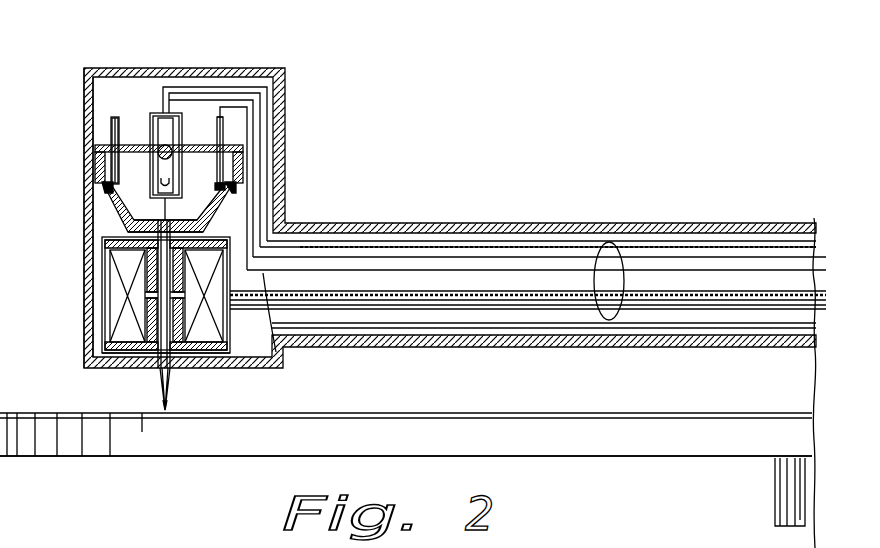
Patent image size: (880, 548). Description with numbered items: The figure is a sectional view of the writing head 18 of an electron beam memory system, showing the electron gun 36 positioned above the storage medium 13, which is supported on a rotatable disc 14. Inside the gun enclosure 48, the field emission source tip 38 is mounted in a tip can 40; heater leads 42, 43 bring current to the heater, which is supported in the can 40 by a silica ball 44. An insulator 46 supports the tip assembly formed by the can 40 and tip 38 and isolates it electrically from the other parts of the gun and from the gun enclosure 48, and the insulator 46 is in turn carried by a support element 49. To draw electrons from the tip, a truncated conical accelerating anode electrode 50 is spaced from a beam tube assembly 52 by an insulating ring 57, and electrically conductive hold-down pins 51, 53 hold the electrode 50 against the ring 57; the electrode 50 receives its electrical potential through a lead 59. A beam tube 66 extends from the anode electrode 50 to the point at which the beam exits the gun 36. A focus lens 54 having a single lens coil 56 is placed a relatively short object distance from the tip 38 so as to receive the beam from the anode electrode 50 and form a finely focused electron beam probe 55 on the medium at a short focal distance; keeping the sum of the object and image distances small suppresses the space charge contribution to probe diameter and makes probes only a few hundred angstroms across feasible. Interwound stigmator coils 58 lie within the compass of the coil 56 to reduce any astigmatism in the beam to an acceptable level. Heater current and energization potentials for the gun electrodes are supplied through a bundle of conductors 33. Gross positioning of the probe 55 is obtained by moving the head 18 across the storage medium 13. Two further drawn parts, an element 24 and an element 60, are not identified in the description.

The storage medium 13 is at (78, 412).
The rotatable disc 14 is at (78, 456).
The writing head 18 is at (388, 100).
The duct 24 is at (506, 222).
The bundle of conductors 33 is at (609, 242).
The gun 36 is at (220, 232).
The field emission source tip 38 is at (160, 193).
The tip can 40 is at (150, 166).
The heater lead 42 is at (190, 68).
The heater lead 43 is at (252, 134).
The silica ball 44 is at (160, 148).
The insulator 46 is at (115, 142).
The gun enclosure 48 is at (283, 78).
The support element 49 is at (95, 147).
The truncated conical accelerating anode electrode 50 is at (122, 221).
The hold-down pin 51 is at (117, 112).
The beam tube assembly 52 is at (128, 232).
The hold-down pin 53 is at (219, 117).
The focus lens 54 is at (237, 322).
The electron beam probe 55 is at (165, 410).
The lens coil 56 is at (228, 368).
The insulating ring 57 is at (232, 186).
The stigmator coils 58 is at (140, 268).
The lead 59 is at (258, 95).
The center pole 60 is at (147, 315).
The beam tube 66 is at (160, 380).